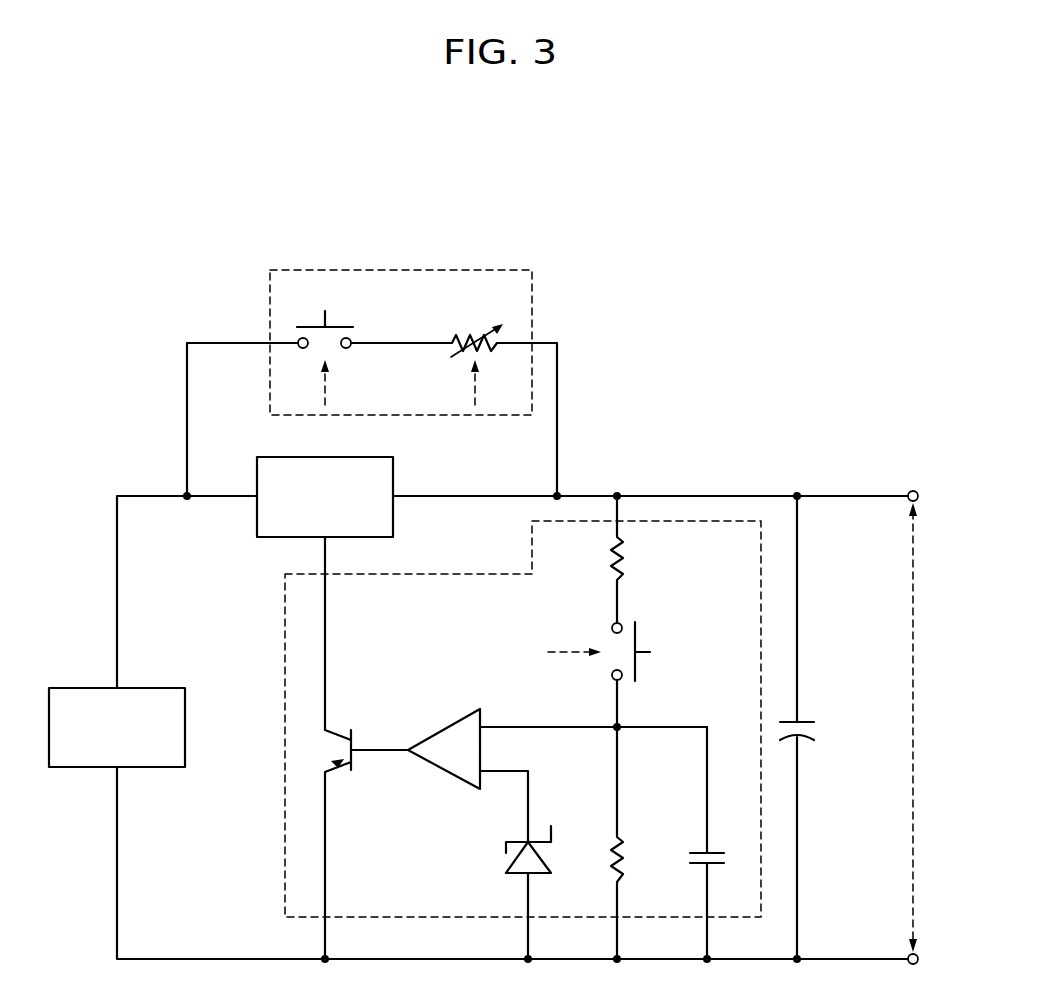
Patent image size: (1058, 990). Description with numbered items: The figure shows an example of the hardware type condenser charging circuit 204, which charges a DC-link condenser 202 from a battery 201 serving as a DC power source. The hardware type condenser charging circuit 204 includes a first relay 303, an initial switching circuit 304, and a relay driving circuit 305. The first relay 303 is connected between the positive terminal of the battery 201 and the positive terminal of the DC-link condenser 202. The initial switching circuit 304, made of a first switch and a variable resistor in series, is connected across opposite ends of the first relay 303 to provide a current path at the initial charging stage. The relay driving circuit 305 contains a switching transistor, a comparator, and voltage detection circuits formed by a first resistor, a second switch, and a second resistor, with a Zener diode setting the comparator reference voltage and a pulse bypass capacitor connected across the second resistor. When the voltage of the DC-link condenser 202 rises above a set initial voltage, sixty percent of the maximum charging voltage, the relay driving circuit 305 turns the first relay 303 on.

The battery 201 is at (130, 688).
The DC-link condenser 202 is at (814, 732).
The hardware type condenser charging circuit 204 is at (762, 230).
The first relay 303 is at (328, 457).
The initial switching circuit 304 is at (403, 270).
The relay driving circuit 305 is at (285, 746).